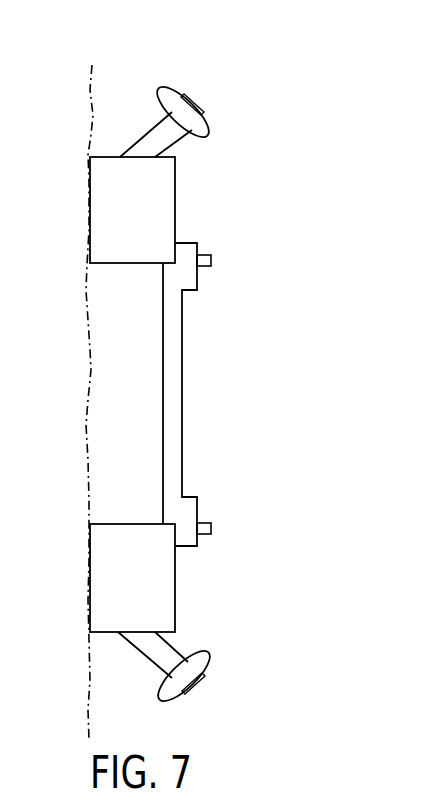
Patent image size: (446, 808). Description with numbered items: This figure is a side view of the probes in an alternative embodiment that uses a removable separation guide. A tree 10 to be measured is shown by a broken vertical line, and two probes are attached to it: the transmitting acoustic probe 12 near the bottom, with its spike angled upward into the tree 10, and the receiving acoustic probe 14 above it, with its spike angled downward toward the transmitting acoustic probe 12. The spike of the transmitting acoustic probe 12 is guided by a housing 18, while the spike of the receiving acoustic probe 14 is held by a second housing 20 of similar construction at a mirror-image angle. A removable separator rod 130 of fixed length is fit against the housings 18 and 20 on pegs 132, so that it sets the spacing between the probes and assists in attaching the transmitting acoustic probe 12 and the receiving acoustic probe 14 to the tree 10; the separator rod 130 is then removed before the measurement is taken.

The tree 10 is at (70, 392).
The transmitting acoustic probe 12 is at (208, 665).
The receiving acoustic probe 14 is at (173, 88).
The housing 18 is at (103, 580).
The second housing 20 is at (103, 218).
The removable separator rod 130 is at (182, 392).
The pegs 132 is at (211, 258).